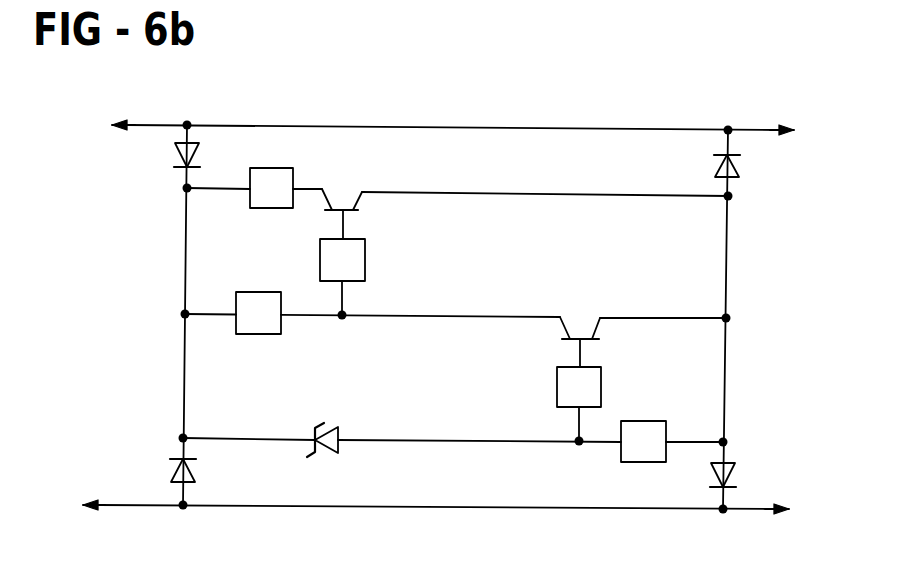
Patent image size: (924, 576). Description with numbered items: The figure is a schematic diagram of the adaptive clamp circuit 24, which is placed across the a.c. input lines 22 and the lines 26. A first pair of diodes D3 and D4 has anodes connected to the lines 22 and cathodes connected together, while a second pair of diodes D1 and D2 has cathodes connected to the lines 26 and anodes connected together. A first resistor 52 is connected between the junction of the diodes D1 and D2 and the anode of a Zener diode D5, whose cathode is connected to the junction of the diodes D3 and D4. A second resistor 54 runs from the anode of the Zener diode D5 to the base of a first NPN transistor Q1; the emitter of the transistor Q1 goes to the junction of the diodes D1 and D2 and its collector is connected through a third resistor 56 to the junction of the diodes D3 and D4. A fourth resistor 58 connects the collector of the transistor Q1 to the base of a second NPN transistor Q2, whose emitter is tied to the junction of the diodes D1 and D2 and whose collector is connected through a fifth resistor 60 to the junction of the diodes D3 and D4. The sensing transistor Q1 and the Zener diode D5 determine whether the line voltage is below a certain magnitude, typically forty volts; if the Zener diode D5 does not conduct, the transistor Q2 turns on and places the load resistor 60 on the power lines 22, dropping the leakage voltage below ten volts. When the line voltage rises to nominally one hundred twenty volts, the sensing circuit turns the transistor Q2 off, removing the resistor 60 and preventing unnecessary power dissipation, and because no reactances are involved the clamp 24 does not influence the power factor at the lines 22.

The lines 22 is at (157, 125).
The adaptive clamp circuit 24 is at (442, 555).
The lines 26 is at (759, 128).
The first resistor 52 is at (637, 421).
The second resistor 54 is at (557, 395).
The third resistor 56 is at (258, 292).
The fourth resistor 58 is at (365, 263).
The fifth resistor 60 is at (268, 168).
The first NPN transistor Q1 is at (585, 333).
The second NPN transistor Q2 is at (341, 203).
The diode D1 is at (735, 472).
The diode D2 is at (736, 167).
The diode D3 is at (173, 152).
The diode D4 is at (170, 472).
The Zener diode D5 is at (325, 422).